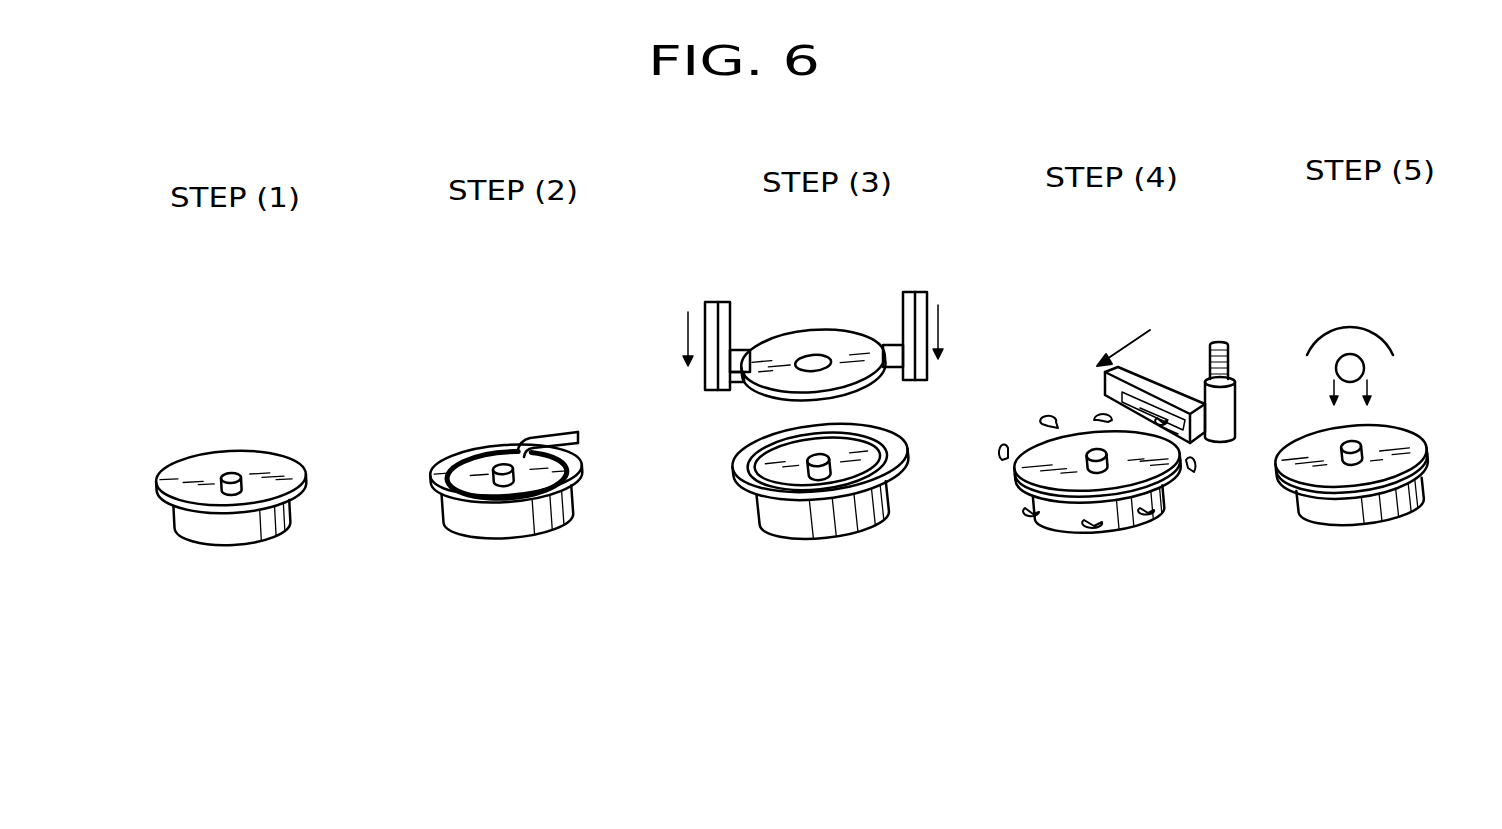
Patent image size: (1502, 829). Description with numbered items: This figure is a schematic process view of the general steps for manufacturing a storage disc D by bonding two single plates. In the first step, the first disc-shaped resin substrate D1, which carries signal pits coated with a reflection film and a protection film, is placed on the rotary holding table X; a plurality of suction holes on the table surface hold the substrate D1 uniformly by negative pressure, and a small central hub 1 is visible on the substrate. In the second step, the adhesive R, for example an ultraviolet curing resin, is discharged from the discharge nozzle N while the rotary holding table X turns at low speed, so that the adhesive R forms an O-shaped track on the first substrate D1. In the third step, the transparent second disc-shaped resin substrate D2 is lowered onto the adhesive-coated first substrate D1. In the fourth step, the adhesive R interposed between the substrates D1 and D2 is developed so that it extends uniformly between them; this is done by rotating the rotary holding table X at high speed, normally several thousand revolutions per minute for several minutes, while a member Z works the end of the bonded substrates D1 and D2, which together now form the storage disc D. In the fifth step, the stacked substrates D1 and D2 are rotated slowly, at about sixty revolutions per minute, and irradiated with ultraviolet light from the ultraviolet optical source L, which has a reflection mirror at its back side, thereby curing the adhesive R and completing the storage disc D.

The center hub of disk 1 is at (226, 474).
The first disc-shaped resin substrate D1 is at (281, 462).
The second disc-shaped resin substrate D2 is at (826, 337).
The storage disc D is at (1022, 424).
The rotary holding table X is at (247, 537).
The adhesive R is at (466, 455).
The discharge nozzle N is at (541, 430).
The member Z is at (1152, 388).
The ultraviolet optical source L is at (1366, 367).